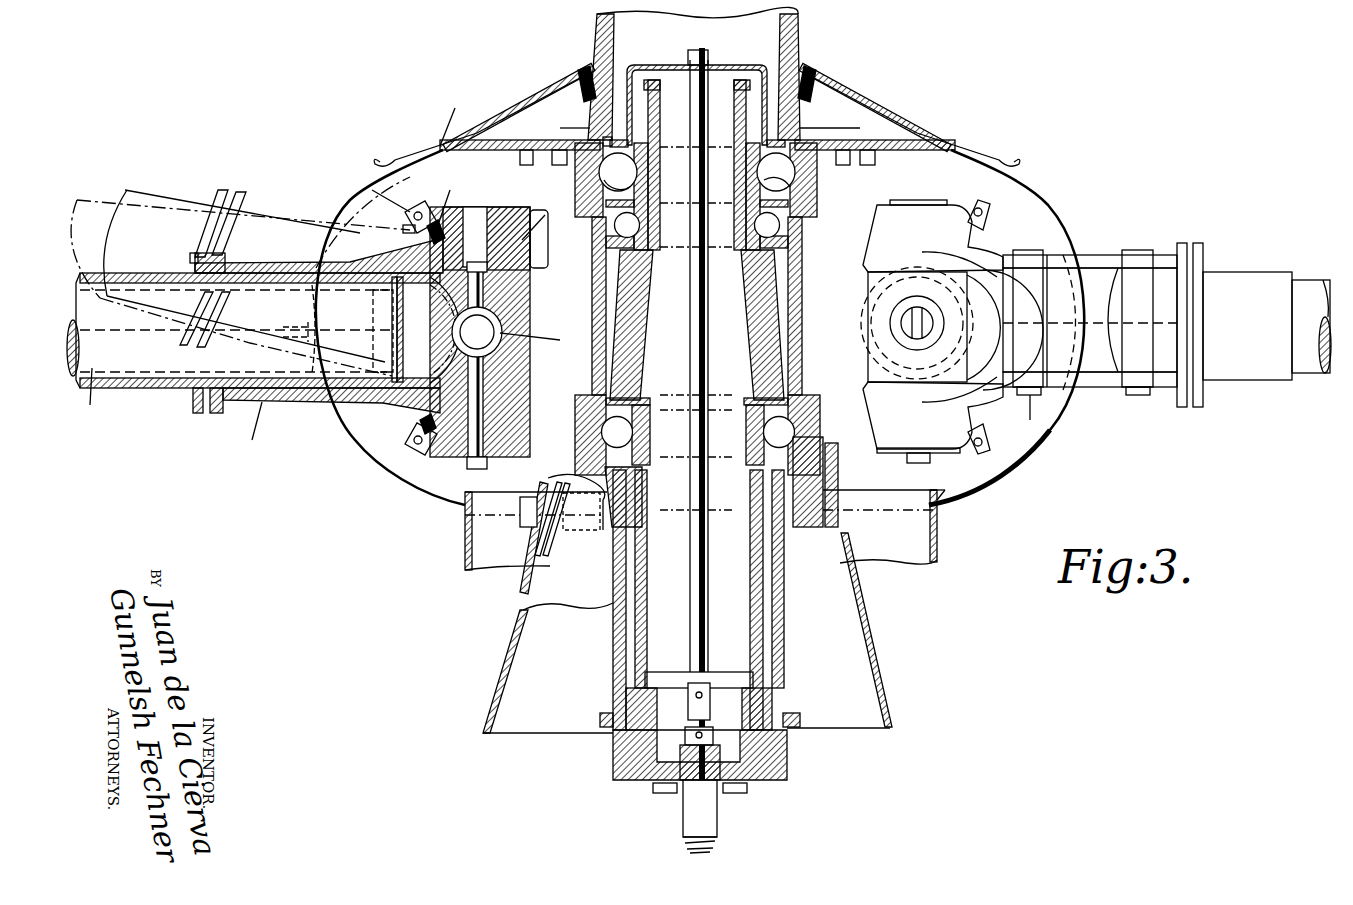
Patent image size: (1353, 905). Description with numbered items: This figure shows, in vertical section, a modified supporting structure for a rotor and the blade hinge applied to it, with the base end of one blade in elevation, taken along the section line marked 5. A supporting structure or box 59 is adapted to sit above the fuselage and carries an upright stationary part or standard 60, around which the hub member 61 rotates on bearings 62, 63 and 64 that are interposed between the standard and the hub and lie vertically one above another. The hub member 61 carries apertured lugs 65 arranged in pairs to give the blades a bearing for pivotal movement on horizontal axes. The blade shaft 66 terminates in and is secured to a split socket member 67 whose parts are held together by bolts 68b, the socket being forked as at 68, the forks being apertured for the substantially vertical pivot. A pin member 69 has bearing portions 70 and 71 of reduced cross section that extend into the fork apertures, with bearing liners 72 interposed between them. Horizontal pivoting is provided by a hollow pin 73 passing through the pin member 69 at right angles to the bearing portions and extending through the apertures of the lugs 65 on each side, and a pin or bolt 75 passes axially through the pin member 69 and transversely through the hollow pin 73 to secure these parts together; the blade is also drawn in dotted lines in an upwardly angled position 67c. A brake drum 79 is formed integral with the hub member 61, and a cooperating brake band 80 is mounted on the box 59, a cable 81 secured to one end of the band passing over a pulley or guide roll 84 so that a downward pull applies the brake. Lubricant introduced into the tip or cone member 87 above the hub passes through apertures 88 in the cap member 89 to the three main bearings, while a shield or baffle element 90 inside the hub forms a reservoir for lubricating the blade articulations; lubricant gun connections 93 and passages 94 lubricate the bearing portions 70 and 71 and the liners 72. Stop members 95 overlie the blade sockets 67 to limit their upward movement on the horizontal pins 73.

The section line 5- 5 is at (585, 436).
The supporting structure or box 59 is at (850, 655).
The upright stationary part or standard 60 is at (752, 610).
The hub member 61 is at (803, 252).
The bearing 62 is at (780, 172).
The bearing 63 is at (762, 226).
The bearing 64 is at (776, 432).
The apertured lugs 65 is at (700, 322).
The blade shaft 66 is at (1312, 370).
The split socket member 67 is at (1100, 388).
The upwardly angled position of blade 67c is at (165, 190).
The forks 68 is at (736, 336).
The bolts 68b is at (1140, 395).
The pin member 69 is at (520, 283).
The bearing portion 70 is at (497, 210).
The bearing portion 71 is at (460, 397).
The bearing liners 72 is at (438, 465).
The hollow pin 73 is at (916, 350).
The pin or bolt 75 is at (470, 462).
The brake drum 79 is at (822, 472).
The brake band 80 is at (840, 522).
The cable 81 is at (523, 595).
The pulley or guide roll 84 is at (553, 548).
The tip or cone member 87 is at (800, 38).
The apertures 88 is at (613, 143).
The cap member 89 is at (657, 66).
The shield or baffle element 90 is at (772, 345).
The lubricant gun connections 93 is at (418, 455).
The passages 94 is at (407, 230).
The stop members 95 is at (950, 148).